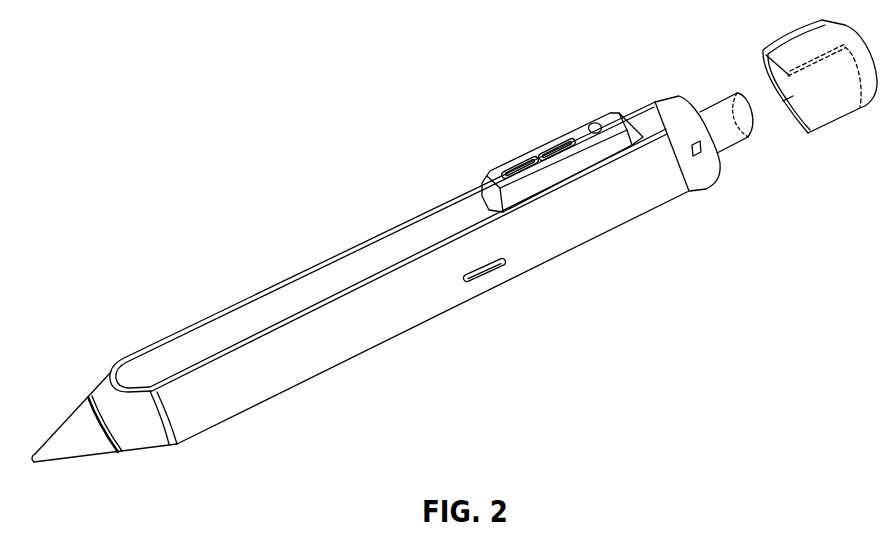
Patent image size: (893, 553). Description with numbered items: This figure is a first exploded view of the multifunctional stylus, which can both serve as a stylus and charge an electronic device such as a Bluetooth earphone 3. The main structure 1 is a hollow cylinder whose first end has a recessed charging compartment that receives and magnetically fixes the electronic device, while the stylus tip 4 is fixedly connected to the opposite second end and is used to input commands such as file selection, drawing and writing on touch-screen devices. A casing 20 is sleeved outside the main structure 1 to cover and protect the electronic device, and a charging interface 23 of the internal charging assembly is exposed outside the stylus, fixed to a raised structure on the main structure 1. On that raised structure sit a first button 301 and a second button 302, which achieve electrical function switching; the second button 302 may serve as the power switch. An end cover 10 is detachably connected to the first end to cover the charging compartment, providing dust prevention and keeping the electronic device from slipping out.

The main structure 1 is at (702, 138).
The Bluetooth earphone 3 is at (722, 128).
The stylus tip 4 is at (56, 450).
The end cover 10 is at (815, 92).
The casing 20 is at (280, 310).
The charging interface 23 is at (488, 274).
The first button 301 is at (515, 167).
The second button 302 is at (594, 123).